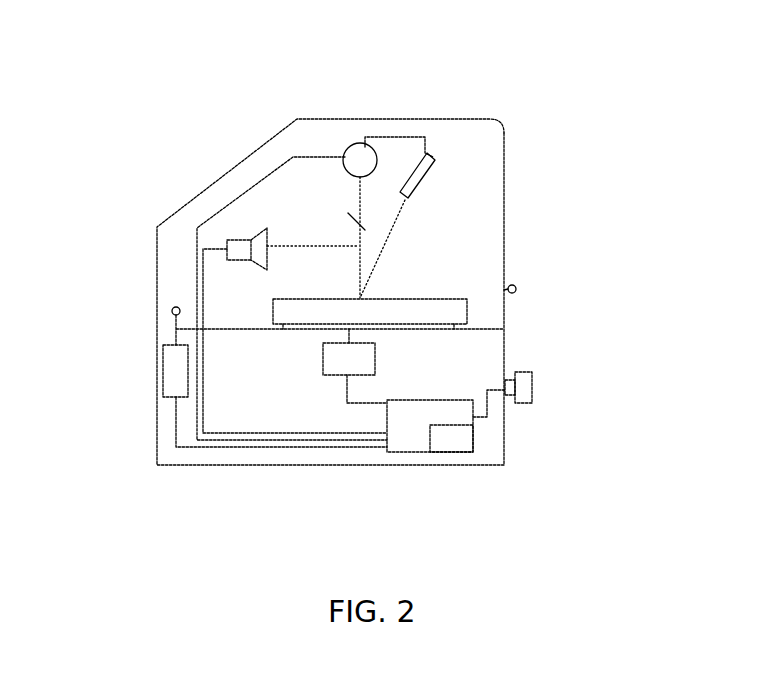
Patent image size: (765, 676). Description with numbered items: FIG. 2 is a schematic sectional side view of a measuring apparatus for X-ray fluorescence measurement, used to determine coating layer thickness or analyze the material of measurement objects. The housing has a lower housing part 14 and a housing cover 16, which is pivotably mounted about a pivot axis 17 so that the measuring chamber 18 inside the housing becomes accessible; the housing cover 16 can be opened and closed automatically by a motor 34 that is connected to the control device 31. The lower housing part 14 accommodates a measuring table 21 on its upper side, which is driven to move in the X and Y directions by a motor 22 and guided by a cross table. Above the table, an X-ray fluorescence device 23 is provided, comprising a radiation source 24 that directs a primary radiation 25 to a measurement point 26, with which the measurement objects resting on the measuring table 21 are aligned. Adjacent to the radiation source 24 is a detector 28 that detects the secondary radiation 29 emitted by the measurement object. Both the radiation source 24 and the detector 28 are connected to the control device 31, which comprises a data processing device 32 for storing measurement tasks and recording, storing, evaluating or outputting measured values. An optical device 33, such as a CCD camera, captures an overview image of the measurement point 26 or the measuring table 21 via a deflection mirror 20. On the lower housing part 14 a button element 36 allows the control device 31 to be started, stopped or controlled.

The lower housing part 14 is at (157, 417).
The housing cover 16 is at (505, 187).
The pivot axis 17 is at (172, 311).
The measuring chamber 18 is at (473, 270).
The deflection mirror 20 is at (347, 222).
The measuring table 21 is at (465, 305).
The motor 22 is at (355, 366).
The X-ray fluorescence device 23 is at (379, 114).
The radiation source 24 is at (352, 160).
The primary radiation 25 is at (360, 200).
The measurement point 26 is at (360, 300).
The detector 28 is at (433, 157).
The secondary radiation 29 is at (397, 217).
The control device 31 is at (400, 445).
The data processing device 32 is at (452, 445).
The optical device 33 is at (240, 240).
The motor 34 is at (172, 360).
The button element 36 is at (529, 385).